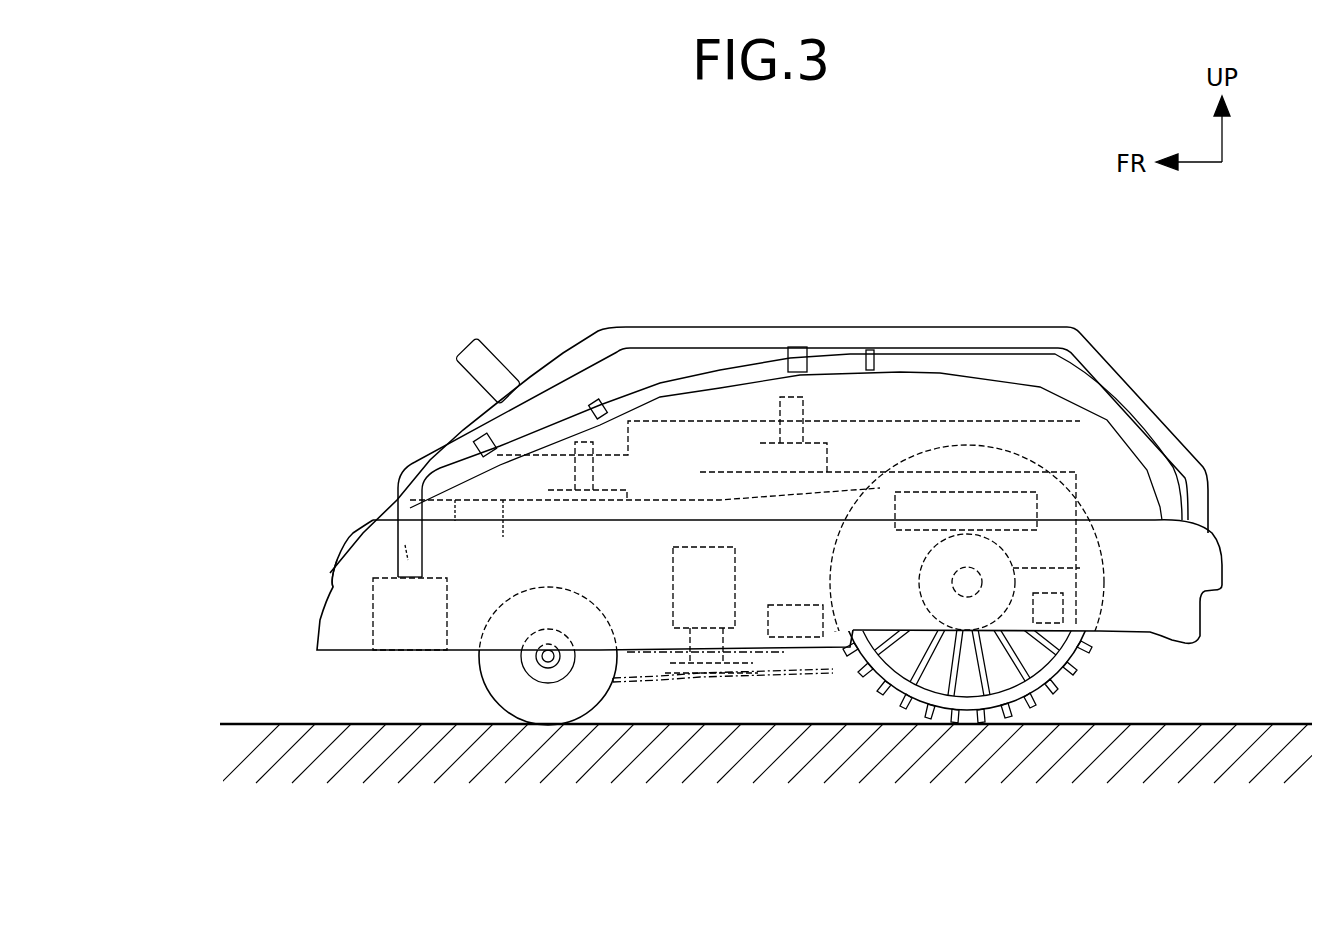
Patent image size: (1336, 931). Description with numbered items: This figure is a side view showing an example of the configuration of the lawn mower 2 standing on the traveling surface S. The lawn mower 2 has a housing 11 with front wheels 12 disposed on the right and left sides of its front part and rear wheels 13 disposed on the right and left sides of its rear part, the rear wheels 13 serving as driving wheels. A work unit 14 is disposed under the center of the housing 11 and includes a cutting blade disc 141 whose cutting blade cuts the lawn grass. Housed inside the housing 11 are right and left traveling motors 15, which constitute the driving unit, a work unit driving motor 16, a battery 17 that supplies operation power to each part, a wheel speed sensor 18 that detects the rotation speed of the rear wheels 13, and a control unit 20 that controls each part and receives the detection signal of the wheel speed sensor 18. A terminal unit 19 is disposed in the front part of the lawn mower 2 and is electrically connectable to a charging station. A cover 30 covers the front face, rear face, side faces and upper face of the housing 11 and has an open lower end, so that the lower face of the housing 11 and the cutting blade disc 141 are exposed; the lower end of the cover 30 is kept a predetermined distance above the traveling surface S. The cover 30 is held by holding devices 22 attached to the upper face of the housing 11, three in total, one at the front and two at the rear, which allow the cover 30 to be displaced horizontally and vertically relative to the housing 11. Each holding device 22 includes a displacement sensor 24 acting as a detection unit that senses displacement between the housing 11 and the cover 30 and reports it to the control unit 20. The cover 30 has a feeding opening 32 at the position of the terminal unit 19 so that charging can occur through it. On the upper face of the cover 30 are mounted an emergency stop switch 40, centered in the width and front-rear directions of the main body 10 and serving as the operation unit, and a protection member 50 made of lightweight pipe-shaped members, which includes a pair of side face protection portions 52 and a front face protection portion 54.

The lawn mower 2 is at (404, 356).
The main body 10 is at (761, 243).
The housing 11 is at (695, 470).
The front wheels 12 is at (583, 700).
The rear wheels 13 is at (1005, 705).
The work unit 14 is at (782, 693).
The cutting blade disc 141 is at (632, 685).
The traveling motors 15 is at (1020, 570).
The work unit driving motor 16 is at (671, 586).
The battery 17 is at (780, 604).
The wheel speed sensor 18 is at (1070, 620).
The terminal unit 19 is at (420, 652).
The control unit 20 is at (1041, 509).
The holding devices 22 is at (600, 460).
The displacement sensor 24 is at (553, 468).
The cover 30 is at (672, 388).
The feeding opening 32 is at (330, 590).
The emergency stop switch 40 is at (831, 452).
The protection member 50 is at (1082, 344).
The side face protection portions 52 is at (797, 342).
The front face protection portion 54 is at (466, 342).
The traveling surface S is at (1255, 722).